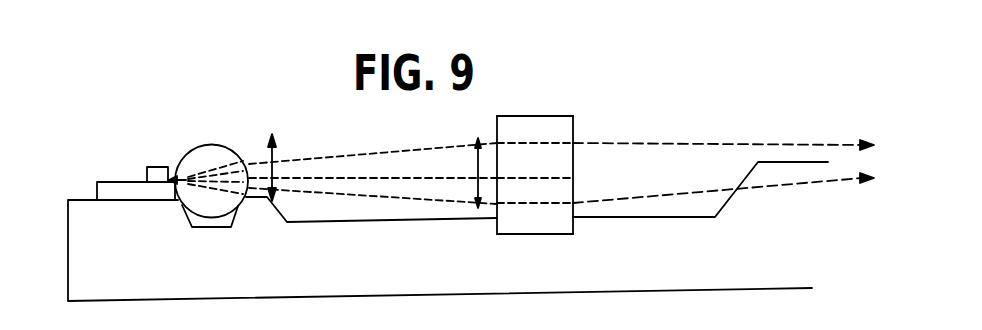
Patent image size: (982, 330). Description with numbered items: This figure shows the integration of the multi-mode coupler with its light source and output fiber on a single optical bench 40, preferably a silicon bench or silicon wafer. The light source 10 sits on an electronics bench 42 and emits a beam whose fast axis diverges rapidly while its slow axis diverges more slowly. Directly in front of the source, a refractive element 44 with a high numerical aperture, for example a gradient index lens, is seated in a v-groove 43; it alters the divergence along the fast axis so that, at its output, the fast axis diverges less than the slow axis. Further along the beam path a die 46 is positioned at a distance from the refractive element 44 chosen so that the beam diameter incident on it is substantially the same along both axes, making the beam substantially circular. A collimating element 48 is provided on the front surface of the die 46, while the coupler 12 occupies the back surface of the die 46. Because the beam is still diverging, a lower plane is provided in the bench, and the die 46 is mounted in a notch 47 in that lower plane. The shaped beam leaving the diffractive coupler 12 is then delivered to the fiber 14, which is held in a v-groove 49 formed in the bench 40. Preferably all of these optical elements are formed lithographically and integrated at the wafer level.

The light source 10 is at (150, 167).
The coupler 12 is at (574, 123).
The fiber 14 is at (800, 142).
The optical bench 40 is at (68, 252).
The electronics bench 42 is at (97, 191).
The v-groove 43 is at (232, 226).
The refractive element 44 is at (222, 144).
The die 46 is at (541, 116).
The notch 47 is at (538, 235).
The collimating element 48 is at (497, 121).
The v-groove 49 is at (727, 198).